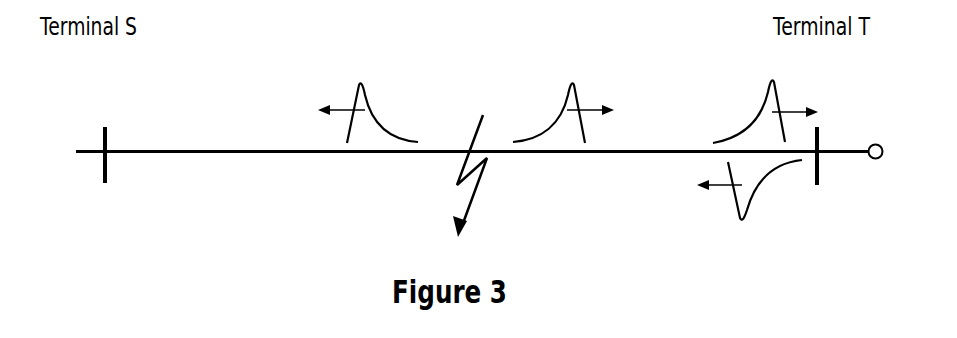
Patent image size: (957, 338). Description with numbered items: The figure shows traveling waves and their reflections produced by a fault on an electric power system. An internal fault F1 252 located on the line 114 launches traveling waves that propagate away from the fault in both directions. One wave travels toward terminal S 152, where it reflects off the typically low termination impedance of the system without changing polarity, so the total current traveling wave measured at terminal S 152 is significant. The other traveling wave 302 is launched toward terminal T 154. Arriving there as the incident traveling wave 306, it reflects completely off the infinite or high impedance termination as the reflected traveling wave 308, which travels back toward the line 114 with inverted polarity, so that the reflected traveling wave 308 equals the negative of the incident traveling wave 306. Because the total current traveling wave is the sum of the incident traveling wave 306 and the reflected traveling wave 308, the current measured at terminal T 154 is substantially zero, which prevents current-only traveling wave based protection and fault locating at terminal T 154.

The line 114 is at (290, 155).
The terminal S 152 is at (100, 173).
The terminal T 154 is at (822, 163).
The internal fault F1 252 is at (475, 132).
The traveling wave 302 is at (558, 113).
The incident current traveling wave 306 is at (768, 80).
The reflected current traveling wave 308 is at (743, 227).